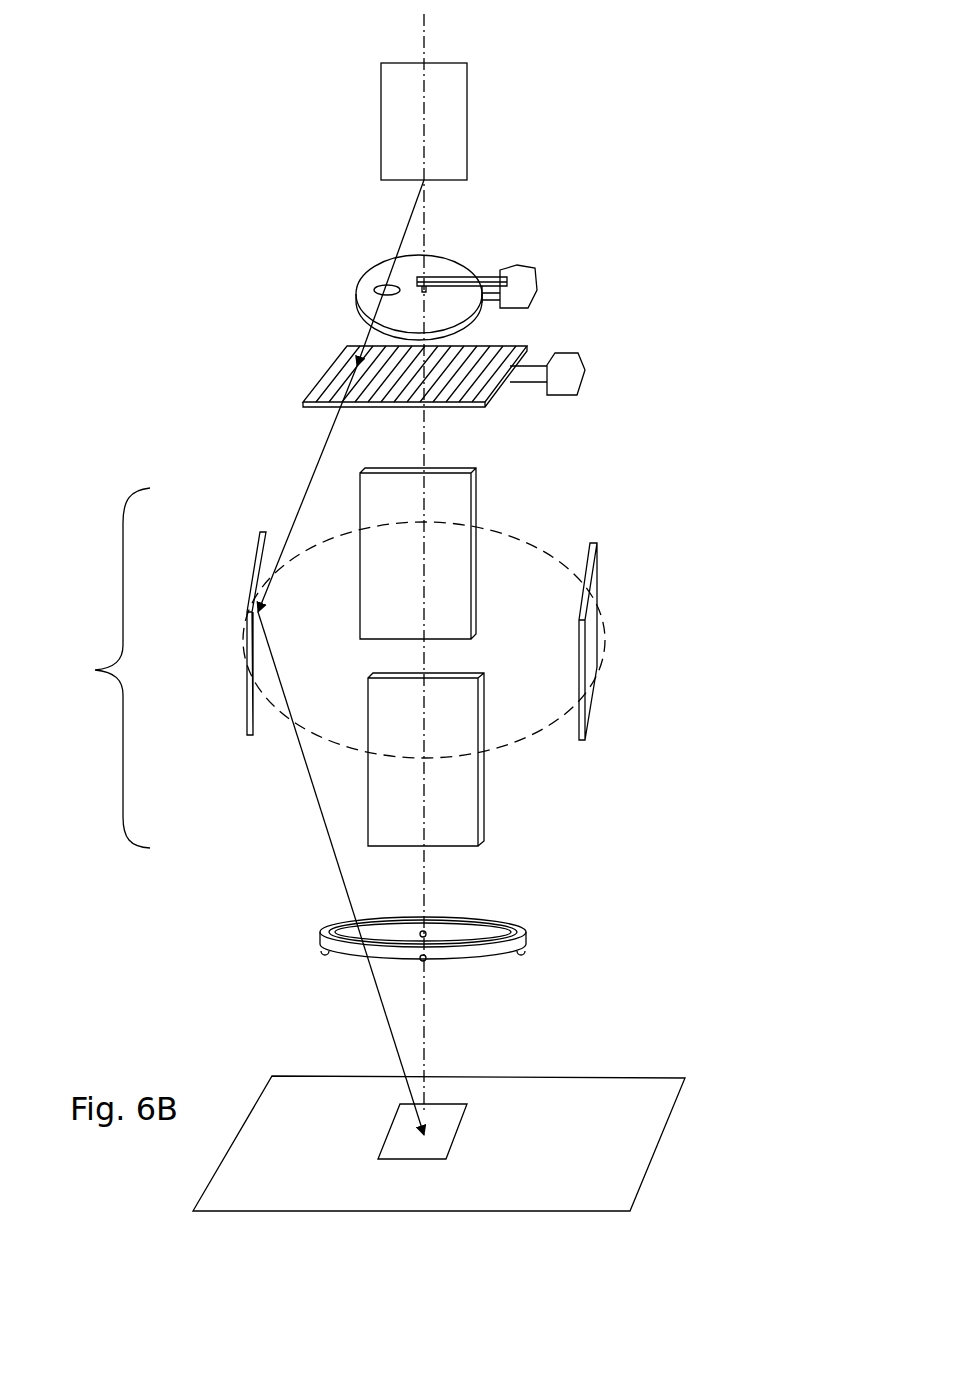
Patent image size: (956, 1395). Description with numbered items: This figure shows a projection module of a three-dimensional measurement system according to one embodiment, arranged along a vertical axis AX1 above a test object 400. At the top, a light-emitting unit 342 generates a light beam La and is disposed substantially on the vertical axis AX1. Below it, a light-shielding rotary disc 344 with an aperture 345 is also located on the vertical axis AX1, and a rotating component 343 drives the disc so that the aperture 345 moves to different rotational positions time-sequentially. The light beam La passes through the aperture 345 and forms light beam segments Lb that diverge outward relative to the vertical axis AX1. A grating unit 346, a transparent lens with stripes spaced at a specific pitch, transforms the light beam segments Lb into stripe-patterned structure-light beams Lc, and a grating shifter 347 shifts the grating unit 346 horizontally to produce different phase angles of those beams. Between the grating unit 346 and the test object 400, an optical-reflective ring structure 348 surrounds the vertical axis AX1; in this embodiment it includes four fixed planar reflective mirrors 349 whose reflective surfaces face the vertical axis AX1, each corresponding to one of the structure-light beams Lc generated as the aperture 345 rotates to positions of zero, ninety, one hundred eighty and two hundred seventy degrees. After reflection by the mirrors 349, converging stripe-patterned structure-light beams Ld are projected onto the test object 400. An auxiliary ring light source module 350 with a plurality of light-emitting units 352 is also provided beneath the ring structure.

The vertical axis AX1 is at (422, 40).
The light-emitting unit 342 is at (381, 112).
The rotating component 343 is at (537, 275).
The light-shielding rotary disc 344 is at (355, 295).
The aperture 345 is at (383, 283).
The grating unit 346 is at (318, 383).
The grating shifter 347 is at (583, 383).
The optical-reflective ring structure 348 is at (324, 668).
The planar reflective mirror 349 is at (477, 502).
The auxiliary ring light source module 350 is at (315, 947).
The light-emitting unit 352 is at (327, 953).
The test object 400 is at (528, 1076).
The light beam La is at (403, 232).
The light beam segments Lb is at (365, 337).
The stripe-patterned structure-light beams Lc is at (317, 468).
The stripe-patterned structure-light beams Ld is at (330, 838).